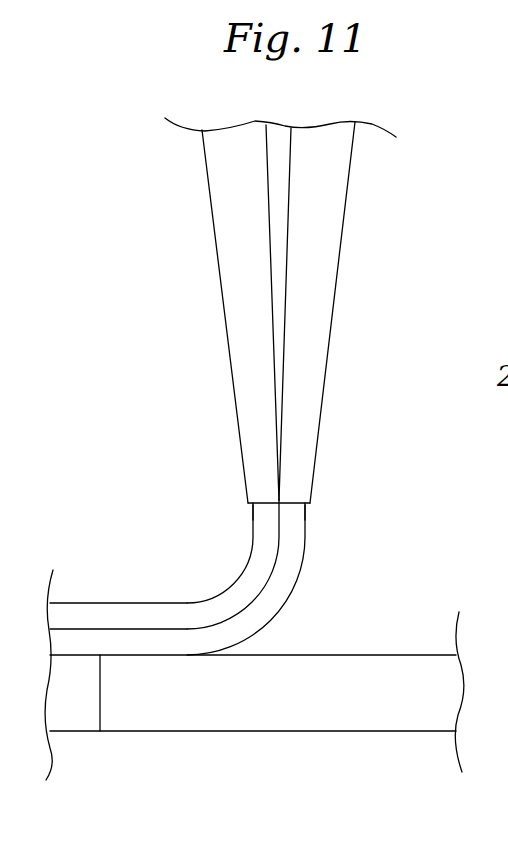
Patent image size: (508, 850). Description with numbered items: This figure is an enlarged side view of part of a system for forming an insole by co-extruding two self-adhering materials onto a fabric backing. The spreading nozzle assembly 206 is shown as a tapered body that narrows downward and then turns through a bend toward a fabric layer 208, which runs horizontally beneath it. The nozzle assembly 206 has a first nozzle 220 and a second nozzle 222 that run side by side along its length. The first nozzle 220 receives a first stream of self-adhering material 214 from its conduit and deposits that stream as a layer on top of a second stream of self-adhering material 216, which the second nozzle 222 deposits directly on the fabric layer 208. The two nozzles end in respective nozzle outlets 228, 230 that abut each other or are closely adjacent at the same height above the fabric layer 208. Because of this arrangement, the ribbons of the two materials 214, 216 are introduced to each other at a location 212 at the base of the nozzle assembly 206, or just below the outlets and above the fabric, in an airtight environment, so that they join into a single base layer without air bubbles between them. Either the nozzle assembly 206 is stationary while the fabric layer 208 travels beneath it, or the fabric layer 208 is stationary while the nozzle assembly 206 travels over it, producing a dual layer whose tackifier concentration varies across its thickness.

The spreading nozzle assembly 206 is at (377, 253).
The fabric layer 208 is at (272, 733).
The location 212 is at (302, 556).
The first stream of self-adhering material 214 is at (112, 605).
The second stream of self-adhering material 216 is at (102, 645).
The first nozzle 220 is at (226, 210).
The second nozzle 222 is at (343, 190).
The nozzle outlet 228 is at (263, 505).
The nozzle outlet 230 is at (308, 521).